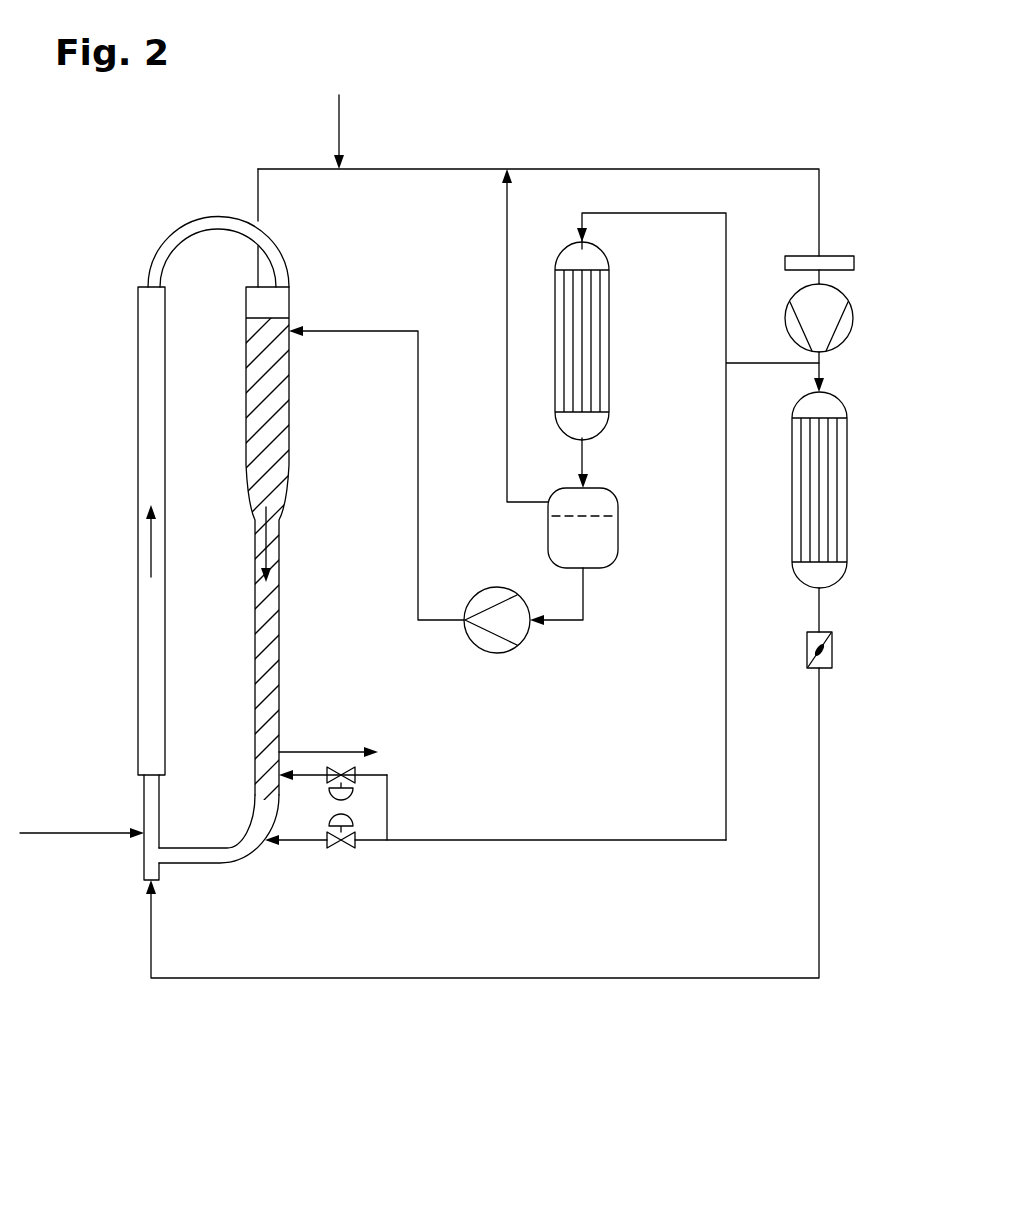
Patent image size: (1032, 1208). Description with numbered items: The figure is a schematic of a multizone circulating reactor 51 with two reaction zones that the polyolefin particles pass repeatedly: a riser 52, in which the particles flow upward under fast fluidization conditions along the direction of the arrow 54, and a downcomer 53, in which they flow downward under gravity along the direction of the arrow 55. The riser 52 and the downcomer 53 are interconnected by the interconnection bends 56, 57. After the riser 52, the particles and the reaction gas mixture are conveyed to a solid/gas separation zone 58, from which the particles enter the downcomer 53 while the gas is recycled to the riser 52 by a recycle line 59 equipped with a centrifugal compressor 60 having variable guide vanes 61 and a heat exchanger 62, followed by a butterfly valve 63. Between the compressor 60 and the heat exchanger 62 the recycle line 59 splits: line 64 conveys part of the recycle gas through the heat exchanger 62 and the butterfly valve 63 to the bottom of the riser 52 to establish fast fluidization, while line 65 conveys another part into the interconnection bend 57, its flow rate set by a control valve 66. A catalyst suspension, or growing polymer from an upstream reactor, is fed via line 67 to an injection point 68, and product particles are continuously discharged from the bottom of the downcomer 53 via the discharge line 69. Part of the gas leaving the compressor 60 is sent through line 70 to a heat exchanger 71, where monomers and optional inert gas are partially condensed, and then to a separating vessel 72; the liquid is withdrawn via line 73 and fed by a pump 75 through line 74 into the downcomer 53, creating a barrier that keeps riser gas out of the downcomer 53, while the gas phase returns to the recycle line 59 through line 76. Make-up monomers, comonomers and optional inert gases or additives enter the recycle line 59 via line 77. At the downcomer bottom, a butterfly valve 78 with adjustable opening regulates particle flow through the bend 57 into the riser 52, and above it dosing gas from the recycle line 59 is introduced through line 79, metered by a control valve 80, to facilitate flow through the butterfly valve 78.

The multizone circulating reactor 51 is at (115, 346).
The riser 52 is at (165, 580).
The downcomer 53 is at (255, 660).
The arrow 54 is at (151, 548).
The arrow 55 is at (280, 538).
The interconnection bend 56 is at (204, 216).
The interconnection bend 57 is at (235, 864).
The solid/gas separation zone 58 is at (289, 300).
The recycle line 59 is at (819, 206).
The centrifugal compressor 60 is at (853, 320).
The variable guide vanes 61 is at (854, 263).
The heat exchanger 62 is at (847, 495).
The butterfly valve 63 is at (832, 648).
The line 64 is at (573, 980).
The line 65 is at (575, 838).
The control valve 66 is at (341, 848).
The line 67 is at (55, 830).
The catalyst injection point 68 is at (143, 840).
The discharge line 69 is at (323, 750).
The line 70 is at (726, 220).
The heat exchanger 71 is at (609, 338).
The separating vessel 72 is at (610, 568).
The line 73 is at (563, 622).
The line 74 is at (405, 330).
The pump 75 is at (478, 590).
The line 76 is at (507, 237).
The line 77 is at (340, 113).
The butterfly valve 78 is at (258, 790).
The line 79 is at (387, 797).
The control valve 80 is at (358, 768).